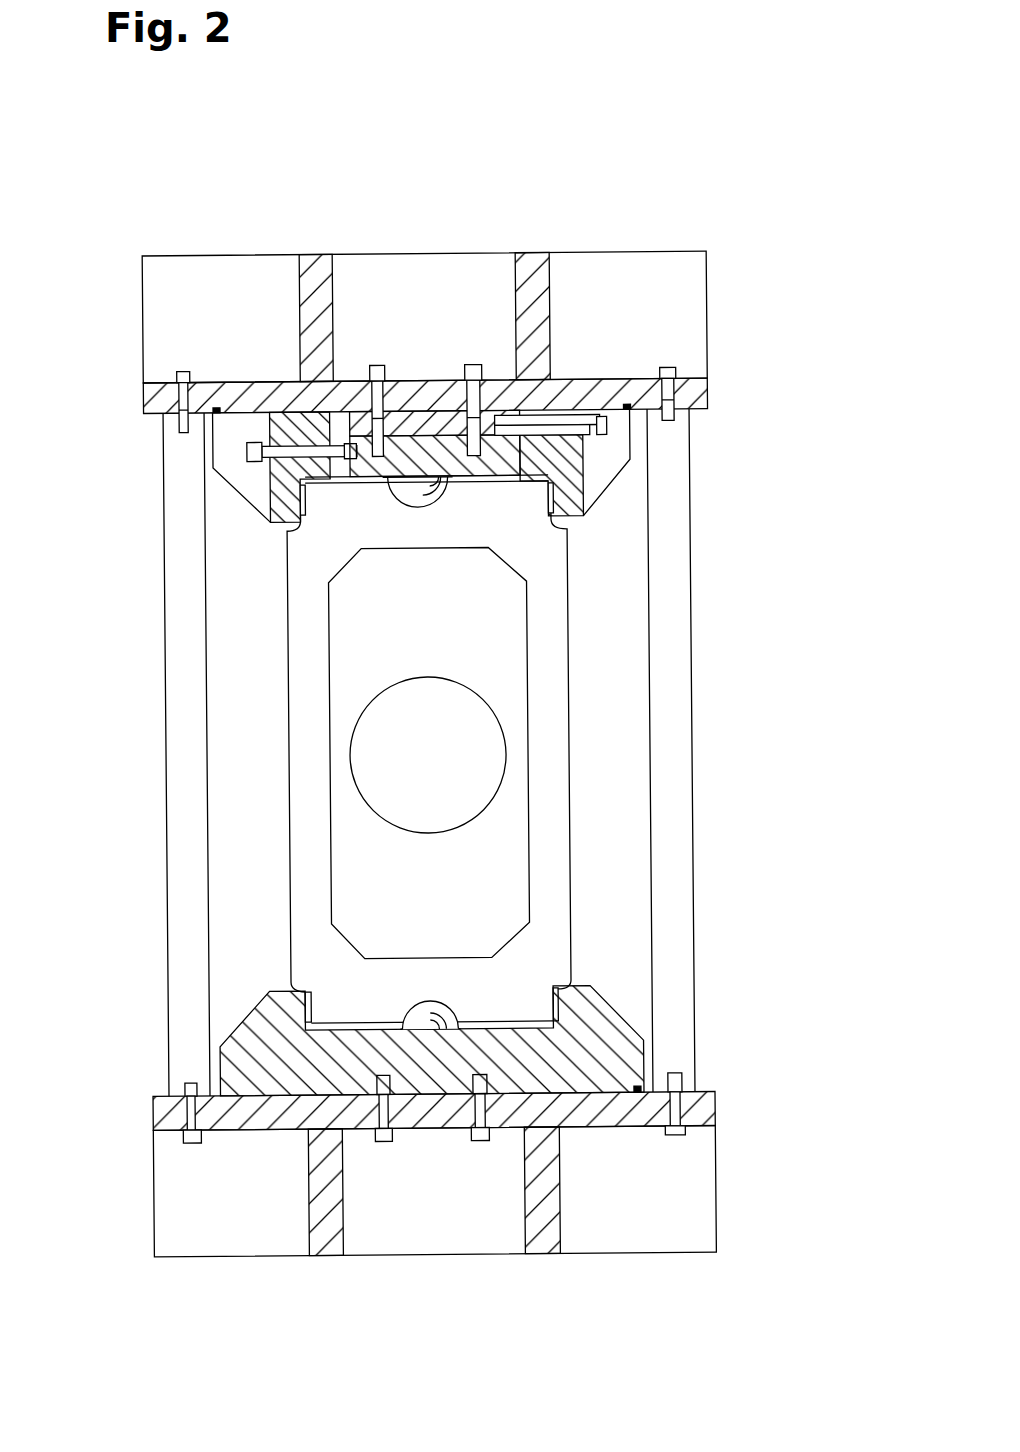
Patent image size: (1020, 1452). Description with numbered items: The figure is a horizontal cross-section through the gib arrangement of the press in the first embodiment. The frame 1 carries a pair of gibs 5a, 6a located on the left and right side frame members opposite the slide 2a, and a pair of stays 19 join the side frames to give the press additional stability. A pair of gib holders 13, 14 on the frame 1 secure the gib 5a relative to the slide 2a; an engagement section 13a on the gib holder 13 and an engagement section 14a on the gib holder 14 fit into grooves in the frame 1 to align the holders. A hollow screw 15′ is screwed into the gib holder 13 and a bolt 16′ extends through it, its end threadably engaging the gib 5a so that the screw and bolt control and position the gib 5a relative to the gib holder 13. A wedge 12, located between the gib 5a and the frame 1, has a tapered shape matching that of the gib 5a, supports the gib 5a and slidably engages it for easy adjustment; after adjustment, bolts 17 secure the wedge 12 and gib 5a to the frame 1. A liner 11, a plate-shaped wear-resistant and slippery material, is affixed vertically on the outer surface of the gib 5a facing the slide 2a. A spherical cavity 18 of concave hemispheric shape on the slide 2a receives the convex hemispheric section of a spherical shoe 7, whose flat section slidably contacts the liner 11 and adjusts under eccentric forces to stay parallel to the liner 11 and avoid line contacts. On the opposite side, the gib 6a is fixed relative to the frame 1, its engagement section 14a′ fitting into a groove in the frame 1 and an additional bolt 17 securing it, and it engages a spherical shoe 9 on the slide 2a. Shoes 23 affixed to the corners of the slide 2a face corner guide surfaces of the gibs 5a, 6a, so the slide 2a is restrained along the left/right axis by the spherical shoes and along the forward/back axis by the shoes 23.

The frame 1 is at (315, 292).
The slide 2a is at (545, 685).
The gib 5a is at (487, 463).
The gib 6a is at (602, 1032).
The spherical shoe 7 is at (443, 497).
The spherical shoe 9 is at (438, 1006).
The liner 11 is at (388, 482).
The wedge 12 is at (436, 428).
The gib holder 13 is at (250, 428).
The engagement section 13a is at (218, 410).
The gib holder 14 is at (630, 430).
The engagement section 14a is at (628, 410).
The engagement section 14a′ is at (637, 1092).
The hollow screw 15′ is at (247, 448).
The bolt 16′ is at (222, 455).
The bolts 17 is at (379, 368).
The spherical cavity 18 is at (452, 503).
The stays 19 is at (165, 857).
The shoes 23 is at (302, 517).